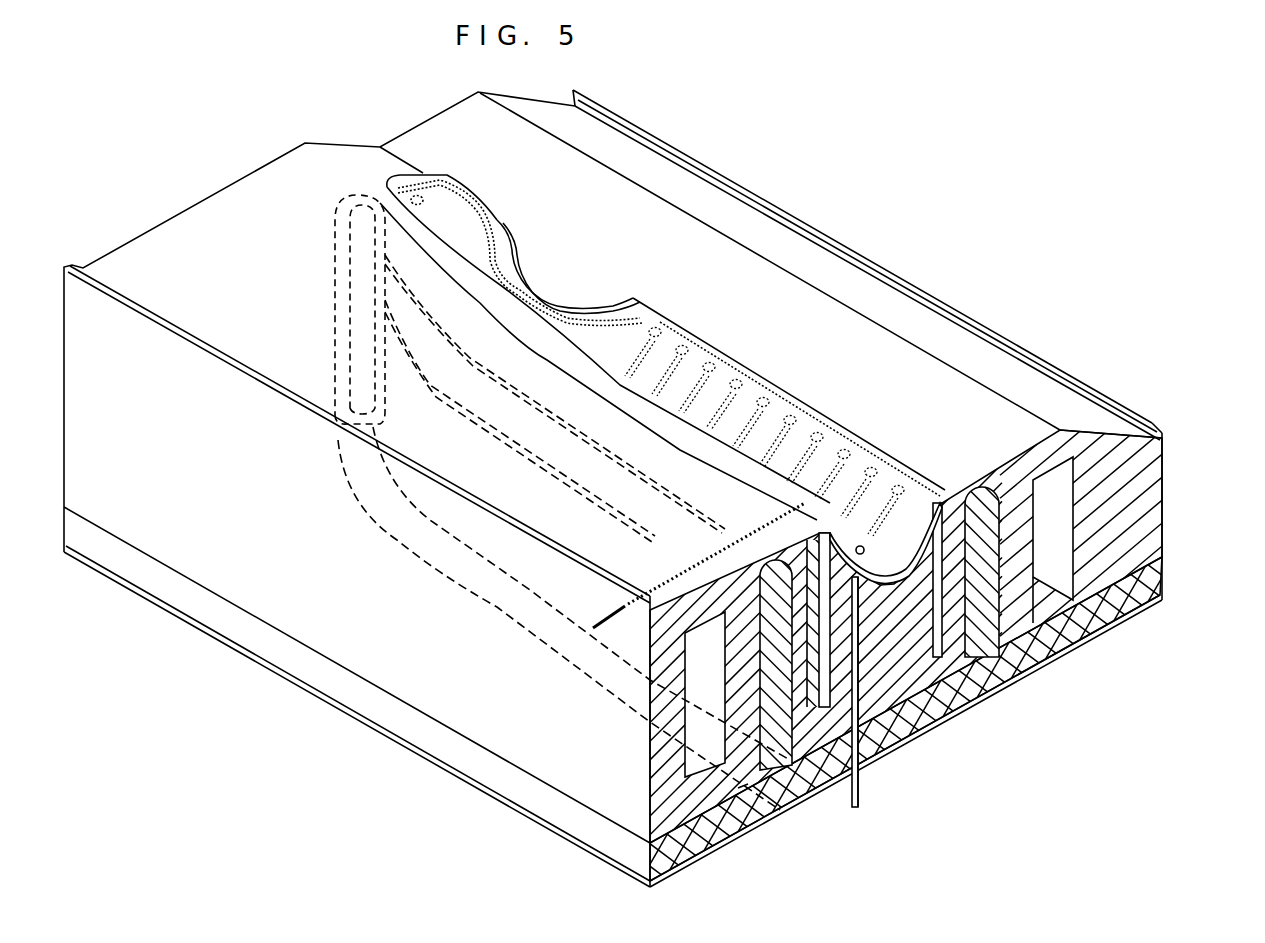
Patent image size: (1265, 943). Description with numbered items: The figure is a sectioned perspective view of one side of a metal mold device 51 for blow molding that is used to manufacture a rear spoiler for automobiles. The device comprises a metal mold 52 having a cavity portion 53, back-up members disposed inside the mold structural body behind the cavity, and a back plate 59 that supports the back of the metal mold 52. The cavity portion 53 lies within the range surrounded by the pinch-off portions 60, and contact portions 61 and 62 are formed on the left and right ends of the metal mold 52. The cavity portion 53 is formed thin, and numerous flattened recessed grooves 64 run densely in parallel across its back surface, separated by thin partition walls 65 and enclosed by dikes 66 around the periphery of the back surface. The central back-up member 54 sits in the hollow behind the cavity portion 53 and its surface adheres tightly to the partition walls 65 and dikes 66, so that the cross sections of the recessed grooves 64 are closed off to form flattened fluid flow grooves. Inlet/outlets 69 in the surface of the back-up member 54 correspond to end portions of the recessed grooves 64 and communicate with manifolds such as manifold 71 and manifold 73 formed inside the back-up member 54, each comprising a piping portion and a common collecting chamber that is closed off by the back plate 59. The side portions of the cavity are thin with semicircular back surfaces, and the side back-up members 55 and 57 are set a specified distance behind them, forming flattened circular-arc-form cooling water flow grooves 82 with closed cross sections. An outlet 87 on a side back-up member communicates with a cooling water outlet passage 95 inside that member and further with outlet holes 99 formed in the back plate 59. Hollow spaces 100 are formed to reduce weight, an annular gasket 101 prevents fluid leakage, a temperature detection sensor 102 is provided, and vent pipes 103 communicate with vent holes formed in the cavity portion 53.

The metal mold device for blow molding 51 is at (914, 122).
The metal mold 52 is at (910, 358).
The cavity portion 53 is at (595, 330).
The back-up member 54 is at (907, 585).
The back-up member 55 is at (770, 707).
The back-up member 57 is at (990, 603).
The back plate 59 is at (324, 690).
The pinch-off portions 60 is at (806, 408).
The contact portion 61 is at (284, 388).
The contact portion 62 is at (725, 178).
The recessed grooves 64 is at (658, 362).
The partition walls 65 is at (712, 366).
The dikes 66 is at (772, 553).
The inlet/outlets 69 is at (741, 382).
The manifold 71 is at (830, 712).
The manifold 73 is at (924, 692).
The cooling water flow grooves 82 is at (1056, 425).
The outlet 87 is at (358, 210).
The cooling water outlet passage 95 is at (360, 334).
The outlet holes 99 is at (357, 428).
The hollow spaces 100 is at (1062, 512).
The annular gasket 101 is at (745, 788).
The temperature detection sensor 102 is at (597, 622).
The vent pipes 103 is at (858, 790).